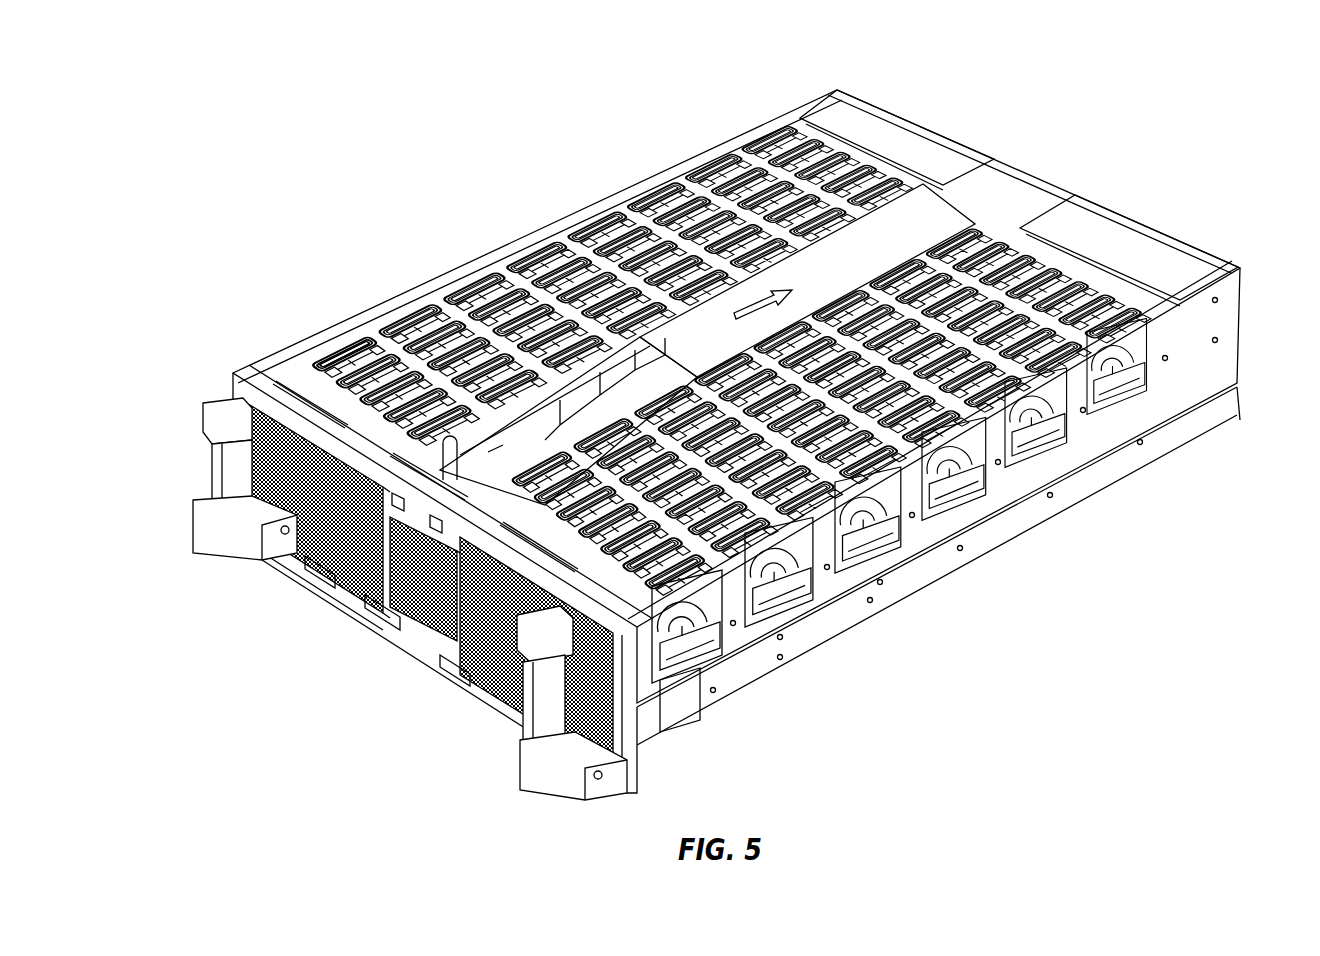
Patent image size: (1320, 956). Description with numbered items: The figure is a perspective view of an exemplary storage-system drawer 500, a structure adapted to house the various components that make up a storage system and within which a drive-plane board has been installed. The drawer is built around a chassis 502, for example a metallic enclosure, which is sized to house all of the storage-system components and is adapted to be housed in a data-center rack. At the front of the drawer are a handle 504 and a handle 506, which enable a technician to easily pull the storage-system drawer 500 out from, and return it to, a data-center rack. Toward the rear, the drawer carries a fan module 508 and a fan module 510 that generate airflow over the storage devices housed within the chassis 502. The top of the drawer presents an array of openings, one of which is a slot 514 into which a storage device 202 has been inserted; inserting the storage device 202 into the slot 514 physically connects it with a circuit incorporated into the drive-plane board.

The storage-system drawer 500 is at (203, 144).
The chassis 502 is at (1247, 380).
The handle 504 is at (237, 510).
The handle 506 is at (538, 742).
The fan module 508 is at (1030, 166).
The fan module 510 is at (1246, 256).
The slot 514 is at (366, 320).
The storage device 202 is at (357, 347).